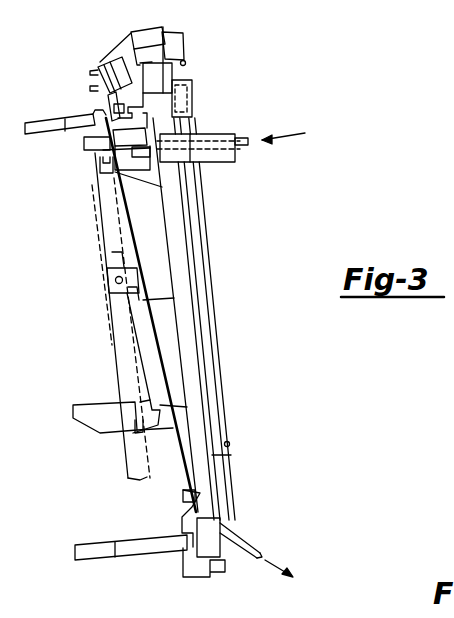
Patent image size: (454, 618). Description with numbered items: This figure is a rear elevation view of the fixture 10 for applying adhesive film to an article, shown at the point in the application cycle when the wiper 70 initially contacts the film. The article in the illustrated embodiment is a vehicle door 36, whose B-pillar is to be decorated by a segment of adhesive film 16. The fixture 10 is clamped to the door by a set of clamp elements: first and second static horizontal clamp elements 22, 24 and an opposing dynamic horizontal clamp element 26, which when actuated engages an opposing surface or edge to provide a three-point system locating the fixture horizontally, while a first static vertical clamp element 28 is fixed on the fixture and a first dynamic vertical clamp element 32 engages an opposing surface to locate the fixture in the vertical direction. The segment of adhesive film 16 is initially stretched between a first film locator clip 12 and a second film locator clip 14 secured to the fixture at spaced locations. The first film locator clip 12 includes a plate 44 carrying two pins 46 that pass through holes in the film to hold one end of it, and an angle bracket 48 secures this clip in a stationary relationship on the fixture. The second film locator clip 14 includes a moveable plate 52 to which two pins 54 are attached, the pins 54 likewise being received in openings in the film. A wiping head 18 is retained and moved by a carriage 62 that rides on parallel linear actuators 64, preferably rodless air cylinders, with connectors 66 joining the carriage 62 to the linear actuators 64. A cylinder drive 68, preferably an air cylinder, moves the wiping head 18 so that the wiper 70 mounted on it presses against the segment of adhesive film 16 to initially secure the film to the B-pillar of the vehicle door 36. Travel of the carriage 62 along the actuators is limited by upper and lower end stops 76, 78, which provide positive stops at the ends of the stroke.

The fixture 10 is at (224, 578).
The first film locator clip 12 is at (81, 75).
The second film locator clip 14 is at (156, 518).
The segment of adhesive film 16 is at (127, 315).
The wiping head 18 is at (115, 172).
The first static horizontal clamp element 22 is at (55, 154).
The second static horizontal clamp element 24 is at (131, 564).
The dynamic horizontal clamp element 26 is at (101, 326).
The first static vertical clamp element 28 is at (150, 315).
The first dynamic vertical clamp element 32 is at (117, 398).
The vehicle door 36 is at (111, 438).
The plate 44 is at (72, 62).
The pins 46 is at (88, 110).
The angle bracket 48 is at (128, 50).
The moveable plate 52 is at (257, 533).
The pins 54 is at (236, 524).
The carriage 62 is at (182, 77).
The linear actuators 64 is at (205, 319).
The connectors 66 is at (213, 98).
The cylinder drive 68 is at (223, 159).
The wiper 70 is at (80, 161).
The upper end stop 76 is at (208, 49).
The lower end stop 78 is at (241, 444).